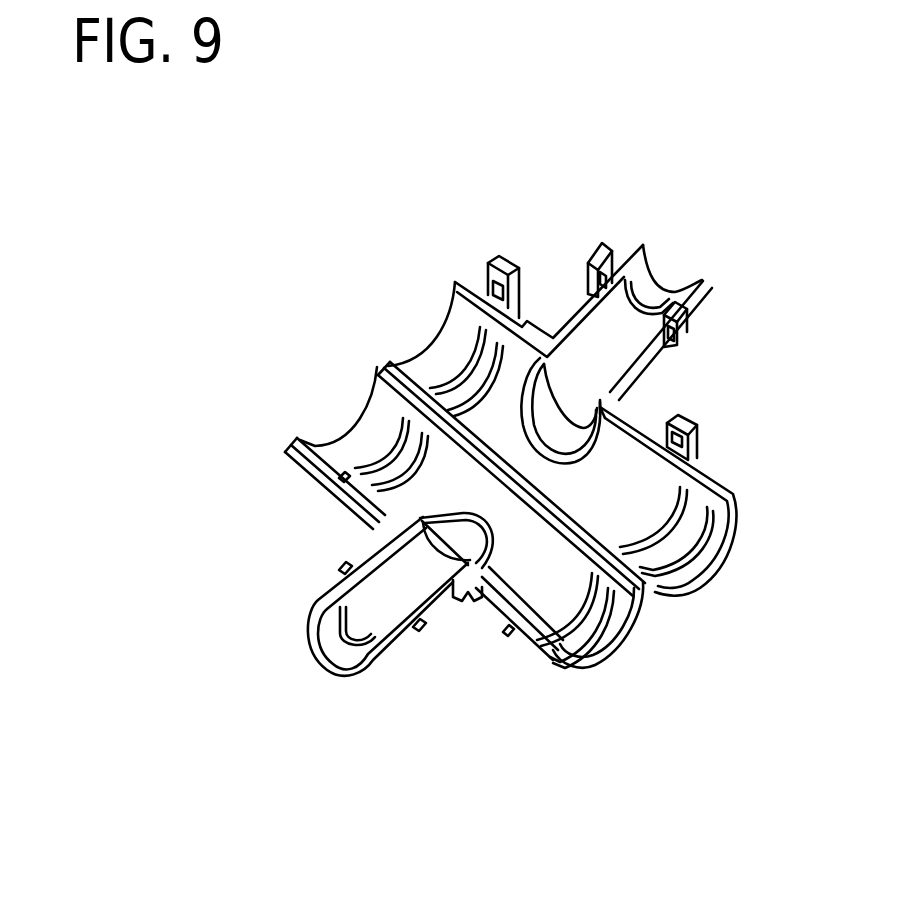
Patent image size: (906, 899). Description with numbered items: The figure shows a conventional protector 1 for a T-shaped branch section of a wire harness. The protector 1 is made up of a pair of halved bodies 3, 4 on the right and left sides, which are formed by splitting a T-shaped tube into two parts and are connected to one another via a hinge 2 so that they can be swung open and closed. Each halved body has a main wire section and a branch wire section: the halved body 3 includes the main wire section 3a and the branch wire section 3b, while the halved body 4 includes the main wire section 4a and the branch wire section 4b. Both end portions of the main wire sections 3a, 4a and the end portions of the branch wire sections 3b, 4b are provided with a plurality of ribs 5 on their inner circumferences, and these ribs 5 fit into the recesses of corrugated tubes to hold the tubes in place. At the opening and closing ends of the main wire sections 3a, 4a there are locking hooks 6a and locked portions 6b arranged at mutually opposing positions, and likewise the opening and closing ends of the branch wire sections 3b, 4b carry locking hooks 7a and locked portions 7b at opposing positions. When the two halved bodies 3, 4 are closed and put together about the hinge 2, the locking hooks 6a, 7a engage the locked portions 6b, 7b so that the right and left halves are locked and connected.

The protector 1 is at (538, 258).
The hinge 2 is at (645, 586).
The halved body 3 is at (308, 660).
The main wire section 3a is at (637, 640).
The branch wire section 3b is at (325, 588).
The halved body 4 is at (658, 278).
The main wire section 4a is at (728, 486).
The branch wire section 4b is at (628, 242).
The rib 5 is at (482, 365).
The locking hook 6a is at (343, 477).
The locked portion 6b is at (507, 262).
The locking hook 7a is at (345, 565).
The locked portion 7b is at (590, 258).